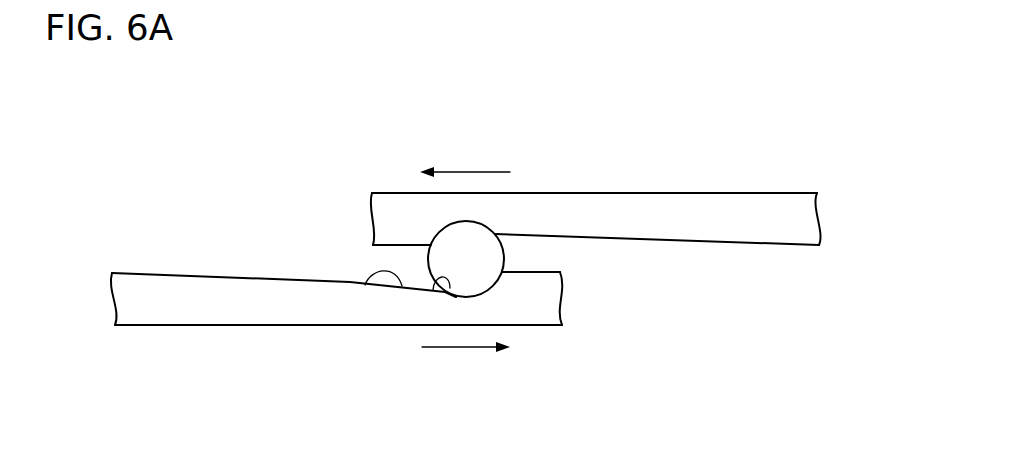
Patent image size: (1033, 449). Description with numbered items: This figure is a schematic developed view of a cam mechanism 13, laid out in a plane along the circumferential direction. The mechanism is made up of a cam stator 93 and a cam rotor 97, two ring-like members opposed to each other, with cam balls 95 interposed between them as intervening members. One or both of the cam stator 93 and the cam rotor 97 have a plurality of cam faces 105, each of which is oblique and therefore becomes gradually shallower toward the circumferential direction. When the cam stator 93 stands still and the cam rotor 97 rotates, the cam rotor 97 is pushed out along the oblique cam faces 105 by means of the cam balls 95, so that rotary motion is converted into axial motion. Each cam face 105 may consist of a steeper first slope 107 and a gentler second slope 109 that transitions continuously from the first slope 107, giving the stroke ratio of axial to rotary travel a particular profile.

The ball bearing assembly 13 is at (473, 92).
The cam stator 93 is at (626, 193).
The cam balls 95 is at (490, 250).
The cam rotor 97 is at (195, 326).
The cam faces 105 is at (481, 220).
The first slope 107 is at (433, 290).
The second slope 109 is at (365, 285).